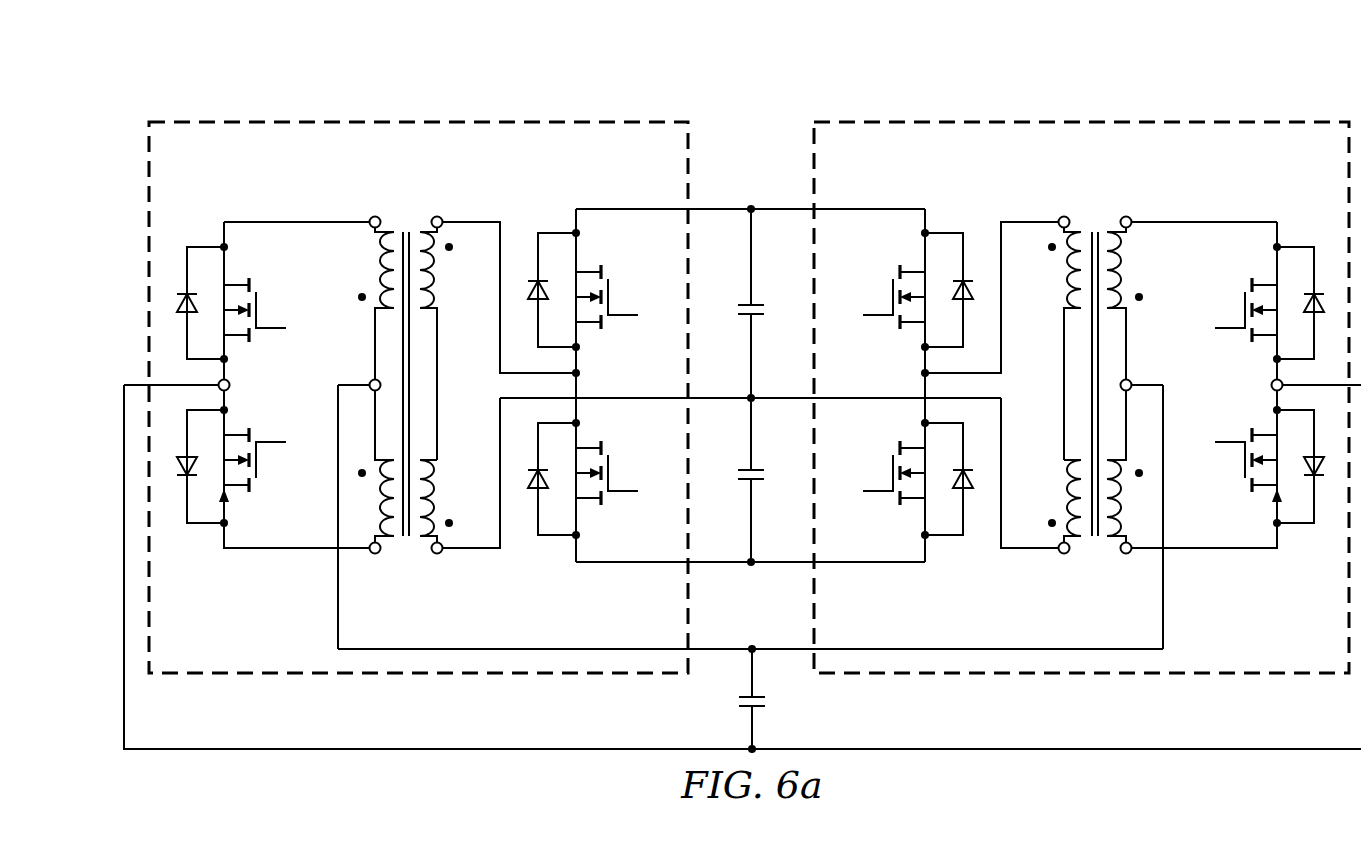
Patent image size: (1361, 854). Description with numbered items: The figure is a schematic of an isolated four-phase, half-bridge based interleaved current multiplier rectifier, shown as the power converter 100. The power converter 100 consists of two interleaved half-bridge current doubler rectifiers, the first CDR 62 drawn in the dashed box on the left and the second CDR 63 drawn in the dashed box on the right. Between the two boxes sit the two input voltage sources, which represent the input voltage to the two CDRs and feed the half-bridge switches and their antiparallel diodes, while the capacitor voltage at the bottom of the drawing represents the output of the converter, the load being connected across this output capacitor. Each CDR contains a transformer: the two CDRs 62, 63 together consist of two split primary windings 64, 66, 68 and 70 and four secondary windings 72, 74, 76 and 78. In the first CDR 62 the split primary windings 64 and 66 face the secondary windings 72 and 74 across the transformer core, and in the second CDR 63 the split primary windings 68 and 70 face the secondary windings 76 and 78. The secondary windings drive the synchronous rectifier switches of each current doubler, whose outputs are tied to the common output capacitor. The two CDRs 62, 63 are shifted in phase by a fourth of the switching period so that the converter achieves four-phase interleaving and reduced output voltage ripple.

The power converter 100 is at (792, 105).
The half-bridge CDR 62 is at (343, 117).
The half-bridge CDR 63 is at (1158, 117).
The split primary winding 64 is at (440, 216).
The split primary winding 66 is at (440, 555).
The split primary winding 68 is at (1061, 216).
The split primary winding 70 is at (1061, 555).
The secondary winding 72 is at (377, 216).
The secondary winding 74 is at (377, 555).
The secondary winding 76 is at (1124, 216).
The secondary winding 78 is at (1124, 555).